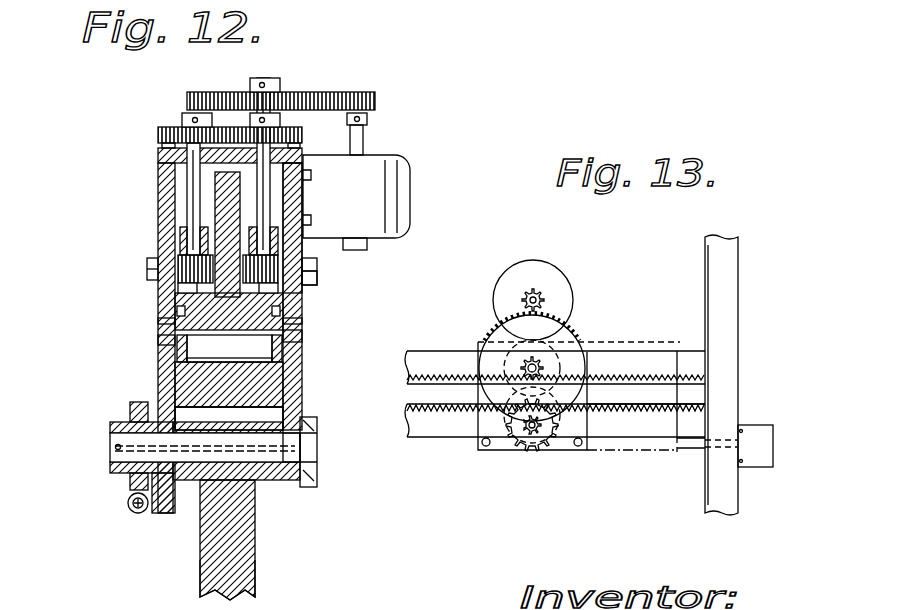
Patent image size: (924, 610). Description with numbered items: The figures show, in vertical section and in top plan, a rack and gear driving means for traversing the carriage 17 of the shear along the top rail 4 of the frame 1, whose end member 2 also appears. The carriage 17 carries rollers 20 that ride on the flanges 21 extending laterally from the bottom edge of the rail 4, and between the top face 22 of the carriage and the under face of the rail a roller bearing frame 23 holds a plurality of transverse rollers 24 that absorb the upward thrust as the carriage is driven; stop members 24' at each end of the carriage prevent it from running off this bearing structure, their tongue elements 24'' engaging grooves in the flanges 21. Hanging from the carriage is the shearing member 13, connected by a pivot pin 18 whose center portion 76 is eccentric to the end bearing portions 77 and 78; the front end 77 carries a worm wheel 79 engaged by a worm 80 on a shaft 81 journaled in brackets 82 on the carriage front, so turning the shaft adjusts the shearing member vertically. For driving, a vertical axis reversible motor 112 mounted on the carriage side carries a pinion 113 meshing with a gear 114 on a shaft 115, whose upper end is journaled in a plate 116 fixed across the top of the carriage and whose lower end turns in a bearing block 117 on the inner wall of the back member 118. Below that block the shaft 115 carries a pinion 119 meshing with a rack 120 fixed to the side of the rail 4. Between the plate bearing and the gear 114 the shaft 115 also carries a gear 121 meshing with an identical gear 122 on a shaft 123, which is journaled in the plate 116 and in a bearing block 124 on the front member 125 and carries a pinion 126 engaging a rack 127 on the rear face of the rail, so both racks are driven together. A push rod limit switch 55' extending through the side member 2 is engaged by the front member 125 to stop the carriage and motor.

In FIG. 13, the frame 1 is at (741, 262).
In FIG. 13, the end member 2 is at (735, 298).
In FIG. 12, the top rail member 4 is at (215, 192).
In FIG. 13, the top rail member 4 is at (695, 400).
In FIG. 12, the shearing member 13 is at (260, 561).
In FIG. 12, the carriage means 17 is at (305, 382).
In FIG. 13, the carriage means 17 is at (572, 453).
In FIG. 12, the pivot pin 18 is at (290, 425).
In FIG. 12, the rollers 20 is at (175, 290).
In FIG. 12, the flanges 21 is at (336, 304).
In FIG. 12, the top face 22 is at (229, 348).
In FIG. 12, the frame 23 is at (180, 353).
In FIG. 12, the rollers 24 is at (184, 372).
In FIG. 12, the stop members 24' is at (326, 348).
In FIG. 12, the tongue elements 24'' is at (236, 322).
In FIG. 13, the limit switch 55' is at (766, 465).
In FIG. 12, the center portion 76 is at (258, 460).
In FIG. 12, the front end bearing portion 77 is at (115, 440).
In FIG. 12, the end bearing portion 78 is at (317, 452).
In FIG. 12, the worm wheel 79 is at (135, 406).
In FIG. 12, the worm 80 is at (131, 512).
In FIG. 12, the shaft 81 is at (128, 506).
In FIG. 12, the brackets 82 is at (158, 515).
In FIG. 12, the reversible motor 112 is at (400, 185).
In FIG. 13, the reversible motor 112 is at (538, 263).
In FIG. 12, the pinion 113 is at (375, 106).
In FIG. 13, the pinion 113 is at (545, 296).
In FIG. 12, the gear 114 is at (298, 92).
In FIG. 13, the gear 114 is at (492, 326).
In FIG. 12, the shaft 115 is at (290, 198).
In FIG. 13, the shaft 115 is at (545, 368).
In FIG. 13, the plate 116 is at (478, 423).
In FIG. 12, the bearing block 117 is at (265, 213).
In FIG. 12, the back member 118 is at (303, 336).
In FIG. 13, the back member 118 is at (585, 340).
In FIG. 12, the pinion 119 is at (303, 277).
In FIG. 13, the pinion 119 is at (500, 355).
In FIG. 12, the rack 120 is at (303, 260).
In FIG. 13, the rack 120 is at (655, 380).
In FIG. 12, the gear 121 is at (302, 137).
In FIG. 13, the gear 121 is at (510, 366).
In FIG. 12, the gear 122 is at (158, 133).
In FIG. 13, the gear 122 is at (528, 450).
In FIG. 12, the shaft 123 is at (188, 167).
In FIG. 13, the shaft 123 is at (538, 442).
In FIG. 12, the bearing block 124 is at (180, 226).
In FIG. 12, the front member 125 is at (165, 344).
In FIG. 12, the pinion 126 is at (147, 264).
In FIG. 13, the pinion 126 is at (486, 446).
In FIG. 12, the rack 127 is at (232, 258).
In FIG. 13, the rack 127 is at (600, 420).